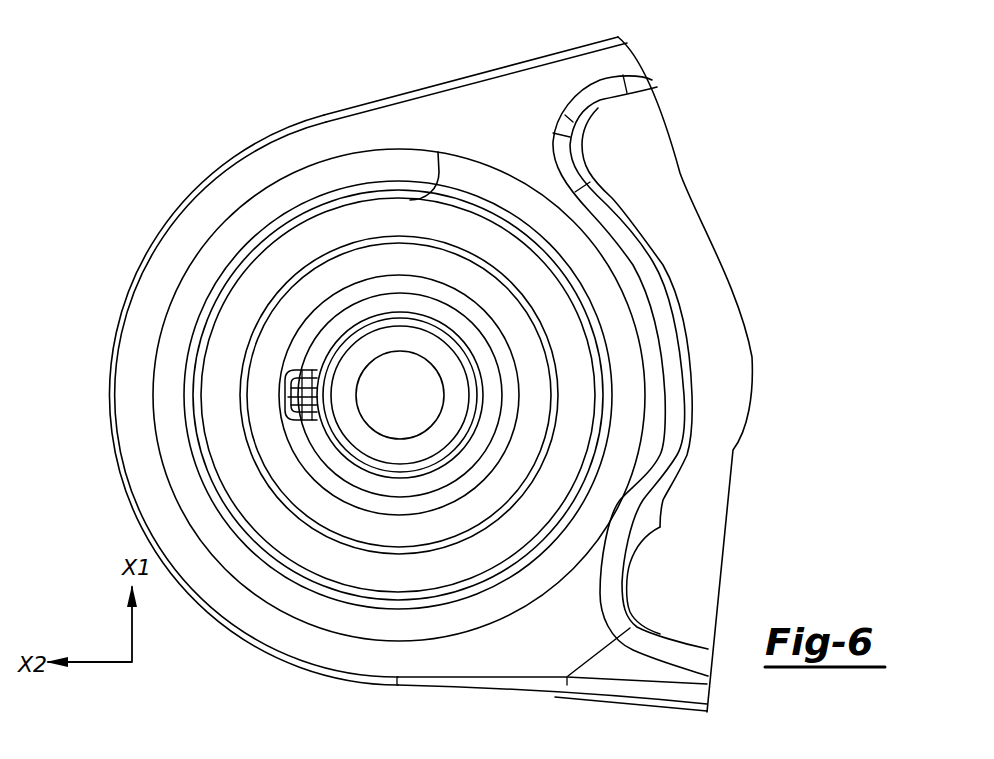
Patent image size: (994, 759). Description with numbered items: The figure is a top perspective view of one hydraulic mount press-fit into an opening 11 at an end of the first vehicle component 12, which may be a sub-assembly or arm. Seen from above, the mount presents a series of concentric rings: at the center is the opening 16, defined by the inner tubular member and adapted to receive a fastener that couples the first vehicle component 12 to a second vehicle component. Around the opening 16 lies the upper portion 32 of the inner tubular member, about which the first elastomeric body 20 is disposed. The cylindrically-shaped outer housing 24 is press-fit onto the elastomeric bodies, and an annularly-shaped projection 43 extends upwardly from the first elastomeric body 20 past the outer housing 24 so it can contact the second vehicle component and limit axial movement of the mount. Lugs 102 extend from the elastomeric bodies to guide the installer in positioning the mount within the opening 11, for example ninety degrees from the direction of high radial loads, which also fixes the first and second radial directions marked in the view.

The opening 11 is at (410, 200).
The first vehicle component 12 is at (662, 530).
The opening 16 is at (357, 400).
The first elastomeric body 20 is at (612, 387).
The outer housing 24 is at (577, 248).
The upper portion 32 is at (457, 400).
The annularly-shaped projection 43 is at (563, 326).
The lugs 102 is at (287, 396).